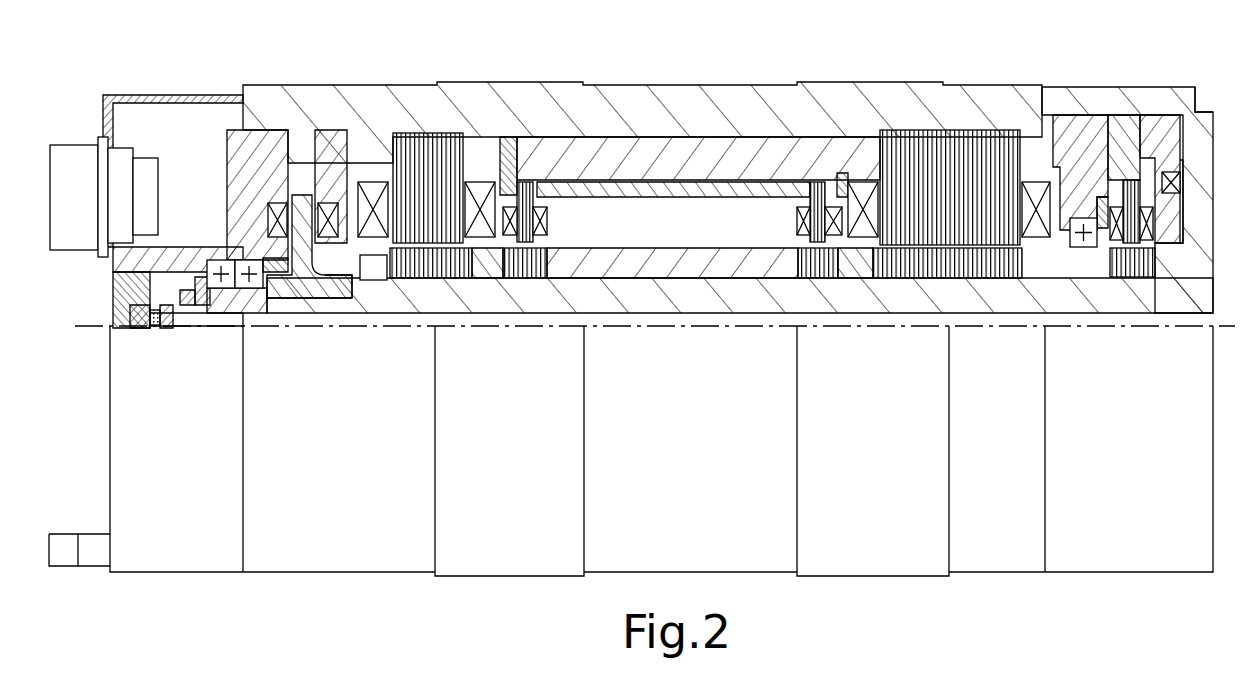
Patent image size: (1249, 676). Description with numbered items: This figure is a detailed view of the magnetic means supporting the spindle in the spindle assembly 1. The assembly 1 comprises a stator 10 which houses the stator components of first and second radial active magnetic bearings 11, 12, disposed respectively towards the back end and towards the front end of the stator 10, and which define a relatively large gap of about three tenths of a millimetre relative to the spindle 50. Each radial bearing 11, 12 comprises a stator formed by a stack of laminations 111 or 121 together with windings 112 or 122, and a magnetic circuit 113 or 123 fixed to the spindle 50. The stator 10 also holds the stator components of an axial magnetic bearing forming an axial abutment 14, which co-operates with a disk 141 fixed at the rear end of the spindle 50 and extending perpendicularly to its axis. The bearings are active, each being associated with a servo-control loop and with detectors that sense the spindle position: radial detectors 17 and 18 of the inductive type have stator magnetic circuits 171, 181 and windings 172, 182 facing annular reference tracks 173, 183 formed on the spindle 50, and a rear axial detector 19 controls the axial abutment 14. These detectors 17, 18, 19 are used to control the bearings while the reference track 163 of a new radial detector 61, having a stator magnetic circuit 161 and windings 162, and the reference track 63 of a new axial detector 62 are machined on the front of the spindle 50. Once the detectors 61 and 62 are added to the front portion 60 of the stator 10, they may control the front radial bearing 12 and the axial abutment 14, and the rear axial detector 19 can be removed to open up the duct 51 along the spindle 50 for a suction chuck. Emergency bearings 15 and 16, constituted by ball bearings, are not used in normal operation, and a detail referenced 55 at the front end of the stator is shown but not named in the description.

The assembly 1 is at (204, 86).
The stator 10 is at (731, 95).
The first radial active magnetic bearing 11 is at (426, 205).
The stack of laminations 111 is at (410, 135).
The windings 112 is at (478, 205).
The magnetic circuit 113 is at (418, 279).
The second radial active magnetic bearing 12 is at (949, 158).
The stack of laminations 121 is at (983, 133).
The windings 122 is at (866, 210).
The magnetic circuit 123 is at (930, 272).
The axial abutment 14 is at (305, 178).
The disk 141 is at (330, 276).
The emergency bearing 15 is at (258, 292).
The emergency bearing 16 is at (1127, 269).
The stator magnetic circuit 161 is at (1102, 191).
The windings 162 is at (1160, 228).
The annular reference track 163 is at (1132, 278).
The radial detector 17 is at (551, 255).
The stator magnetic circuit 171 is at (545, 181).
The windings 172 is at (550, 216).
The annular reference track 173 is at (524, 279).
The radial detector 18 is at (786, 255).
The stator magnetic circuit 181 is at (814, 200).
The windings 182 is at (793, 215).
The annular reference track 183 is at (820, 279).
The axial detector 19 is at (147, 332).
The spindle 50 is at (656, 270).
The duct 51 is at (664, 313).
The end cover notch 55 is at (1203, 130).
The front portion 60 is at (1118, 95).
The radial detector 61 is at (1106, 248).
The axial detector 62 is at (1180, 186).
The reference track 63 is at (1184, 176).